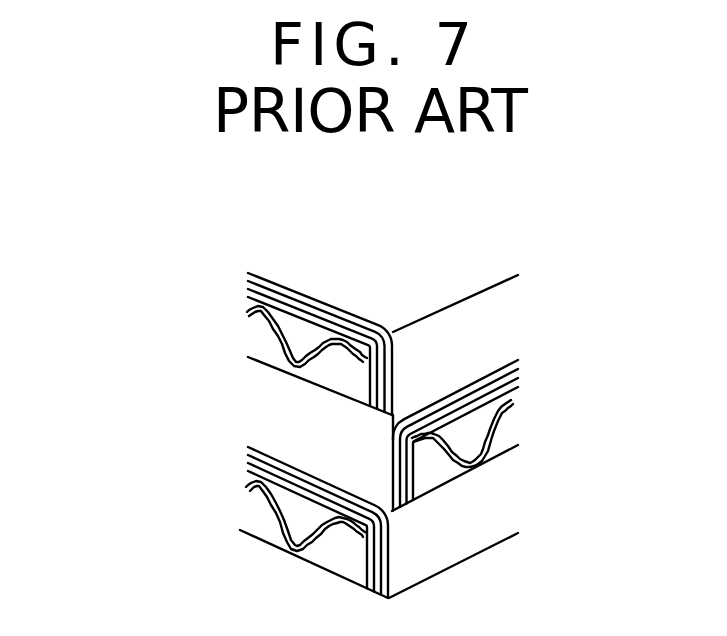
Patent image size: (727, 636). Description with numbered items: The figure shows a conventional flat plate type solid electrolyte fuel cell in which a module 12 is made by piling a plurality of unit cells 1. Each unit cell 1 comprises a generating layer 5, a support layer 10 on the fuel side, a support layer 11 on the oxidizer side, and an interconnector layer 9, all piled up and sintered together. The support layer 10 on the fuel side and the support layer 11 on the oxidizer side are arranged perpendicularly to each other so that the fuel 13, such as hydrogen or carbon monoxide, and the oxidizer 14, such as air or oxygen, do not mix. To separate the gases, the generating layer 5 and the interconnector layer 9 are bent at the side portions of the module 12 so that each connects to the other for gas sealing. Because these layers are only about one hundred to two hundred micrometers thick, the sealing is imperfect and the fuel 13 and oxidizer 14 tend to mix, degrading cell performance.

The unit cell 1 is at (117, 492).
The generating layer 5 is at (507, 379).
The interconnector layer 9 is at (247, 457).
The support layer on the fuel side 10 is at (505, 428).
The support layer on the oxidizer side 11 is at (248, 488).
The module 12 is at (83, 447).
The fuel 13 is at (639, 528).
The oxidizer 14 is at (318, 344).